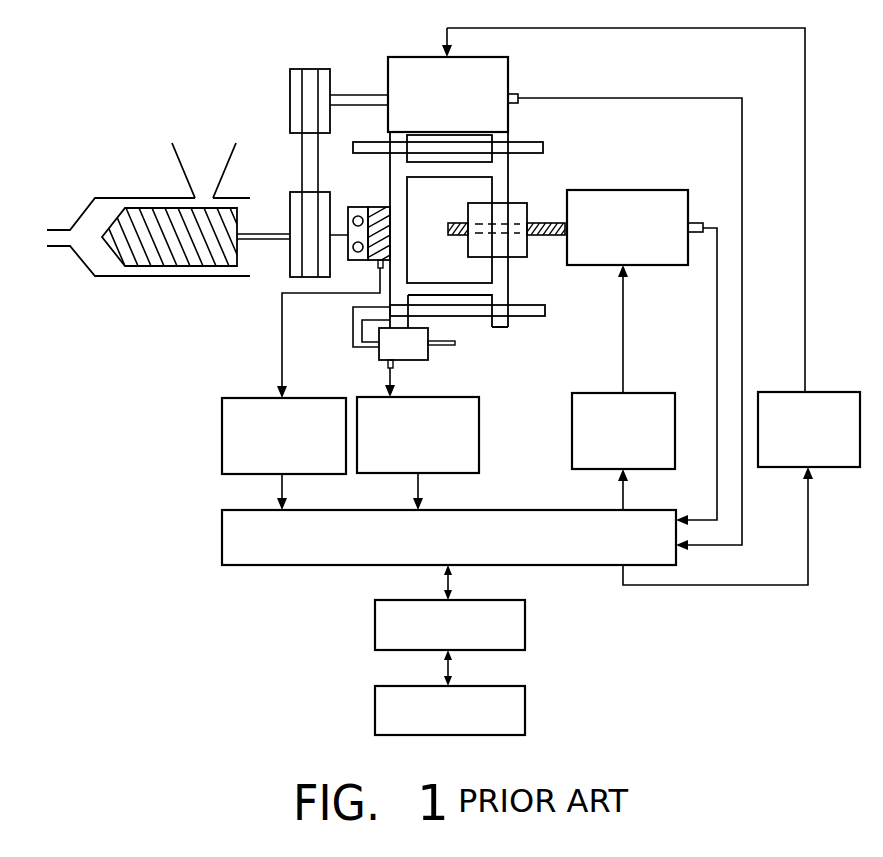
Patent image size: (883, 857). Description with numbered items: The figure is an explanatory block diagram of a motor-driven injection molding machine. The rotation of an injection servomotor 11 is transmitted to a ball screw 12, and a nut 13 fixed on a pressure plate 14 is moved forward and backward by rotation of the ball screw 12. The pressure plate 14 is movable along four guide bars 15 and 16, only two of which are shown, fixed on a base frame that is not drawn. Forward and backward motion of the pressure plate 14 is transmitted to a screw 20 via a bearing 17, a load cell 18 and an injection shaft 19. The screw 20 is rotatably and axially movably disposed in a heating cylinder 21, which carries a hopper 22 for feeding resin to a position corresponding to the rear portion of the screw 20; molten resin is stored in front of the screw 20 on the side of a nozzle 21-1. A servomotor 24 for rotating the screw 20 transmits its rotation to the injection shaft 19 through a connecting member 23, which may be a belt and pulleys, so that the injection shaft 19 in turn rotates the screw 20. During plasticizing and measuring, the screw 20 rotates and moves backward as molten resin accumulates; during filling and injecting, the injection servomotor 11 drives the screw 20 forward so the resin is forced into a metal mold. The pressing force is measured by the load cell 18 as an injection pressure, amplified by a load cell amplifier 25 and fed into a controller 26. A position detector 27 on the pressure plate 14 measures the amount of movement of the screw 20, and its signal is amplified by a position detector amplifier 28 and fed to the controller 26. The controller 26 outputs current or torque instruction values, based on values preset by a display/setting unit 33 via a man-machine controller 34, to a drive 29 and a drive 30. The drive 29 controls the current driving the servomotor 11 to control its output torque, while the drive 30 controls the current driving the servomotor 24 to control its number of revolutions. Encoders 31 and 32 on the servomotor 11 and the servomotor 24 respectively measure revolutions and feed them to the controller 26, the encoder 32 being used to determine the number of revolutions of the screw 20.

The injection servomotor 11 is at (623, 190).
The ball screw 12 is at (544, 223).
The nut 13 is at (517, 203).
The pressure plate 14 is at (500, 278).
The guide bar 15 is at (545, 147).
The guide bar 16 is at (547, 312).
The bearing 17 is at (352, 207).
The load cell 18 is at (375, 207).
The injection shaft 19 is at (268, 240).
The screw 20 is at (125, 207).
The heating cylinder 21 is at (76, 222).
The nozzle 21-1 is at (63, 248).
The hopper 22 is at (178, 158).
The connecting member 23 is at (302, 157).
The servomotor for rotating the screw 24 is at (508, 70).
The load cell amplifier 25 is at (222, 444).
The controller 26 is at (322, 568).
The position detector 27 is at (430, 362).
The position detector amplifier 28 is at (480, 432).
The drive 29 is at (572, 436).
The drive 30 is at (833, 470).
The encoder 31 is at (693, 223).
The encoder 32 is at (512, 104).
The display/setting unit 33 is at (528, 704).
The man-machine controller 34 is at (528, 618).